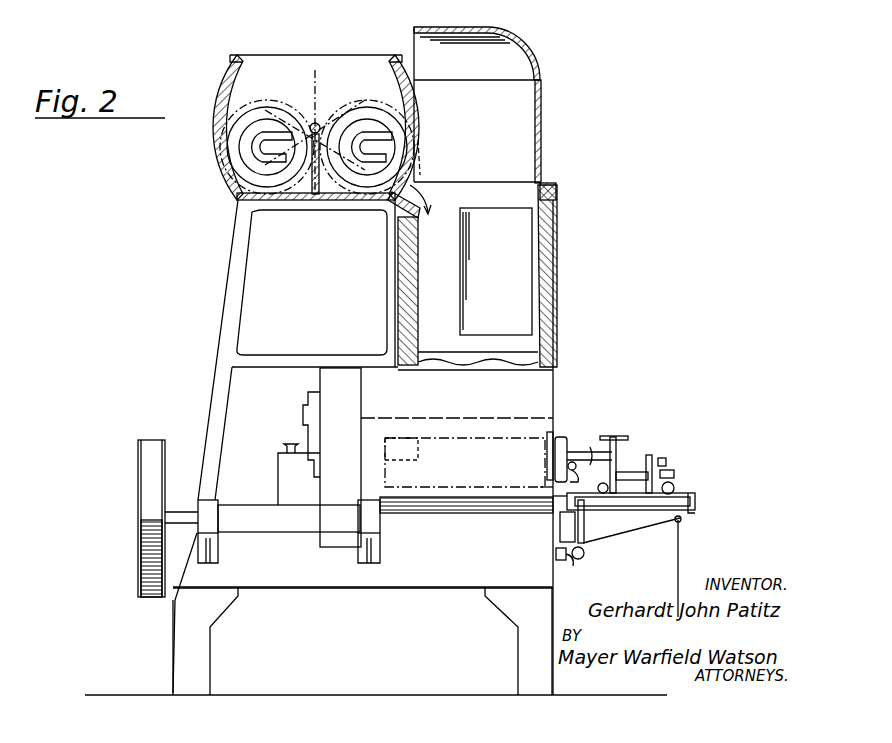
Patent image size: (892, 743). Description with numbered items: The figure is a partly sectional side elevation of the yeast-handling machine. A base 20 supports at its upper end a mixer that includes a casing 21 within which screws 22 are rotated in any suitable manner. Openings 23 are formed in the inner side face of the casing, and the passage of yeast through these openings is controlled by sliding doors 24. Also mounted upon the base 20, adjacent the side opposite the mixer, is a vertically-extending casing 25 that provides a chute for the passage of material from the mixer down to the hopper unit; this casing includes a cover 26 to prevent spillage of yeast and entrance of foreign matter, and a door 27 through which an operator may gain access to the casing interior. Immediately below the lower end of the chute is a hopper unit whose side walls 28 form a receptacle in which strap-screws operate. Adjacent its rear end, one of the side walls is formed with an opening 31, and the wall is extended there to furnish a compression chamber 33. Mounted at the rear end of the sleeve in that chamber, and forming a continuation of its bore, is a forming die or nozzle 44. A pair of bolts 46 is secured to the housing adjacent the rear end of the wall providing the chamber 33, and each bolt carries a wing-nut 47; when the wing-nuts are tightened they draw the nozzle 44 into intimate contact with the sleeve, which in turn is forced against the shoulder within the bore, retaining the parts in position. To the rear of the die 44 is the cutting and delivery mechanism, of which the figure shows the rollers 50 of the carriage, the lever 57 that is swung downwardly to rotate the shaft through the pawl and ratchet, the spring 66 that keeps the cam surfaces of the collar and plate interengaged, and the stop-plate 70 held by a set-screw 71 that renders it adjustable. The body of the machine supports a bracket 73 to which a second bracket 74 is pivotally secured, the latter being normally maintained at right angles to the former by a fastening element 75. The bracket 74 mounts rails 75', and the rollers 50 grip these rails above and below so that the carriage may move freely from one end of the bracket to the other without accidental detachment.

The base 20 is at (228, 307).
The casing 21 is at (222, 158).
The screws 22 is at (358, 105).
The openings 23 is at (424, 148).
The sliding doors 24 is at (418, 166).
The vertically-extending casings 25 is at (542, 160).
The cover 26 is at (462, 28).
The door 27 is at (477, 277).
The side walls 28 is at (545, 403).
The opening 31 is at (403, 456).
The chamber 33 is at (450, 450).
The forming die or nozzle 44 is at (580, 452).
The bolts 46 is at (556, 432).
The wing-nut 47 is at (575, 472).
The rollers 50 is at (683, 493).
The lever 57 is at (615, 438).
The spring 66 is at (674, 482).
The stop-plate 70 is at (650, 456).
The set-screw 71 is at (667, 462).
The bracket 73 is at (574, 556).
The bracket 74 is at (588, 530).
The fastening element 75 is at (529, 479).
The rails 75' is at (703, 558).